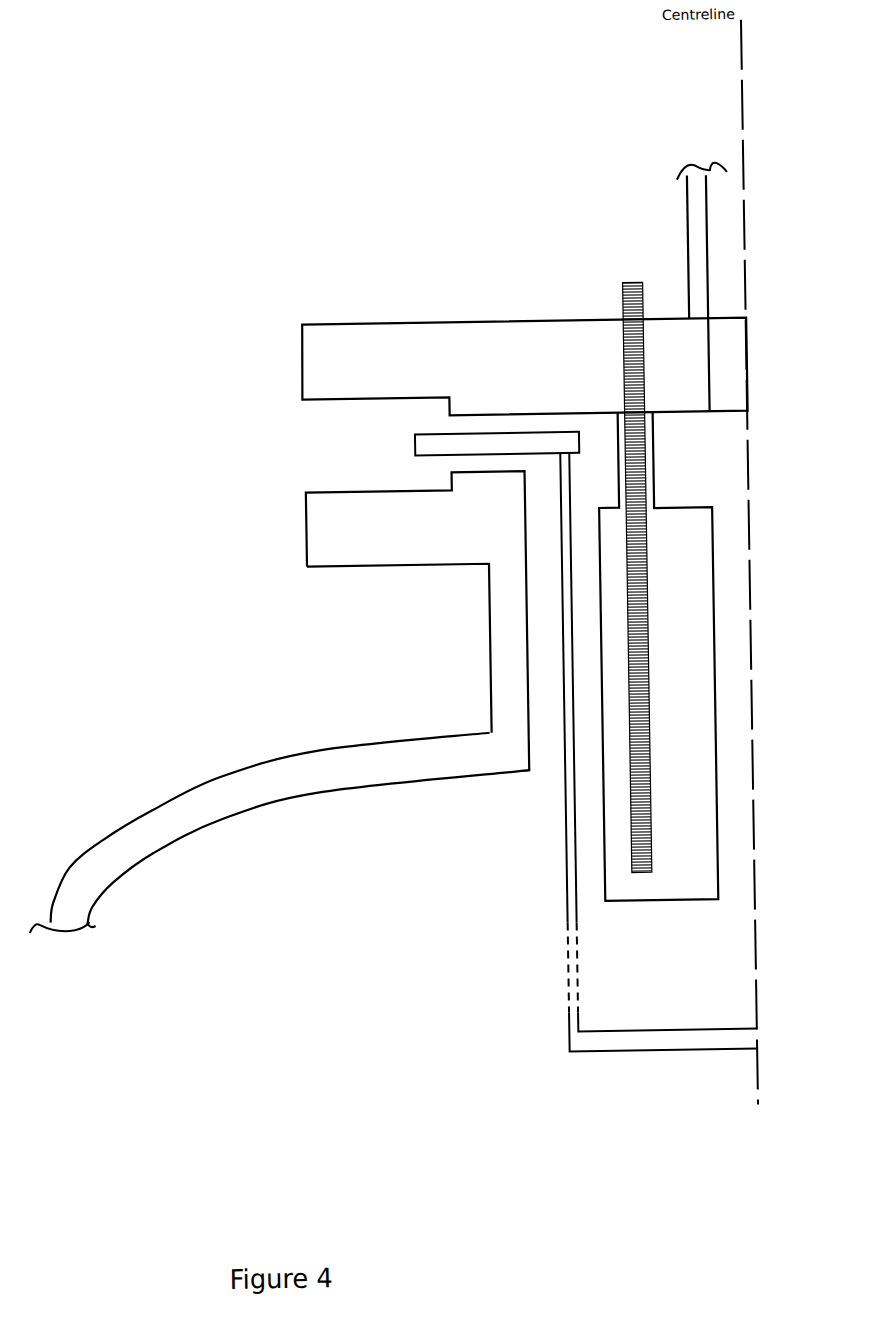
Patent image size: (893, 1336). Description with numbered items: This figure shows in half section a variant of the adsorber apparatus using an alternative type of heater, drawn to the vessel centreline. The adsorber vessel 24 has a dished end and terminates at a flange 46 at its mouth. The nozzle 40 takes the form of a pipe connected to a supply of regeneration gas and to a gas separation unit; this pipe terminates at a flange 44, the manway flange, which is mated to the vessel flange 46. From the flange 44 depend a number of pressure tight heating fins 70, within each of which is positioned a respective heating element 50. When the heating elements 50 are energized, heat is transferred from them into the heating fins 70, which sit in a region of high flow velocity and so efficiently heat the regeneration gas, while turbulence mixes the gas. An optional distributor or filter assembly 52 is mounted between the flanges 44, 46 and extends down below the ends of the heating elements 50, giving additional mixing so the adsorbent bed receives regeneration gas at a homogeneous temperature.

The adsorber vessel 24 is at (210, 784).
The nozzle 40 is at (692, 264).
The flange 44 is at (397, 357).
The flange 46 is at (344, 528).
The heating element 50 is at (623, 800).
The filter assembly 52 is at (563, 1049).
The heating fin 70 is at (674, 874).